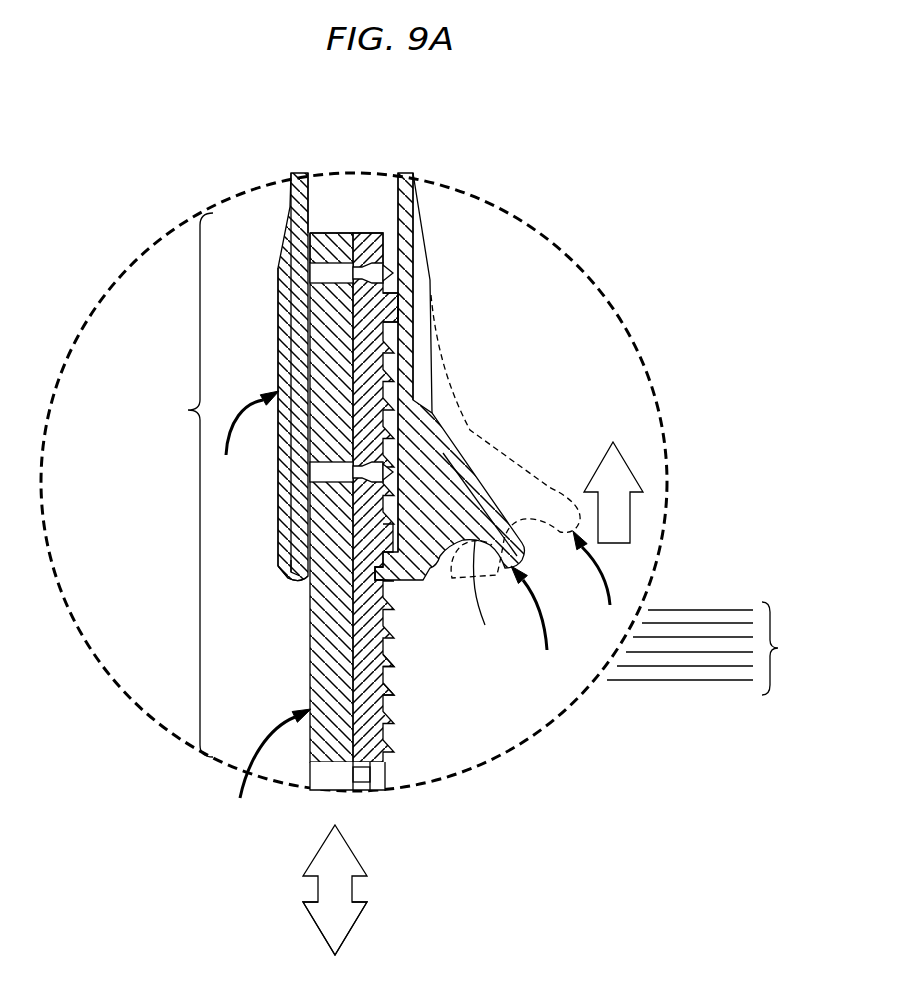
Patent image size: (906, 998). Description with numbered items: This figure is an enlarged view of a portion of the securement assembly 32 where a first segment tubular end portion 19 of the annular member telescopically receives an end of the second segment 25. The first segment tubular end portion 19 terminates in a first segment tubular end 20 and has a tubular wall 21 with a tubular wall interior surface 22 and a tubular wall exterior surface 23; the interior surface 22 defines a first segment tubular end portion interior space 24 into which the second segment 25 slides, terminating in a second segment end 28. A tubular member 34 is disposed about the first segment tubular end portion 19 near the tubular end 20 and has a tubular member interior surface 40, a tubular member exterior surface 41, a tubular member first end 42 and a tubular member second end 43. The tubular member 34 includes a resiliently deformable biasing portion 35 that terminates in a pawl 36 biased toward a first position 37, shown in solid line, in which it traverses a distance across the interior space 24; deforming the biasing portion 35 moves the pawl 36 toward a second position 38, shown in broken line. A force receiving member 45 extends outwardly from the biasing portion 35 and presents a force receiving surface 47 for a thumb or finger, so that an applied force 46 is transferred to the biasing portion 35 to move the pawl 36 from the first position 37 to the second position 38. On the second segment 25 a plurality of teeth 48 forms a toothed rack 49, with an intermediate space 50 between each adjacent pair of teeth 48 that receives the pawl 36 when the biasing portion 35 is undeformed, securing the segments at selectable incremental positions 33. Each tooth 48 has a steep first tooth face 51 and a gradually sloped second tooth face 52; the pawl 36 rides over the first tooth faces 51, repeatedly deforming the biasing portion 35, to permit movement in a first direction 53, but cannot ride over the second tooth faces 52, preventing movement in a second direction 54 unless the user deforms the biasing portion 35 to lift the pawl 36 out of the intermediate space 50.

The first segment tubular end portion 19 is at (310, 680).
The first segment tubular end 20 is at (300, 573).
The tubular wall 21 is at (410, 177).
The tubular wall interior surface 22 is at (398, 215).
The tubular wall exterior surface 23 is at (420, 183).
The first segment tubular end portion interior space 24 is at (350, 188).
The second segment 25 is at (265, 769).
The second segment end 28 is at (330, 232).
The securement assembly 32 is at (188, 485).
The incremental positions 33 is at (705, 648).
The tubular member 34 is at (246, 438).
The biasing portion 35 is at (447, 440).
The pawl 36 is at (415, 580).
The first position 37 is at (534, 625).
The second position 38 is at (595, 584).
The tubular member interior surface 40 is at (290, 490).
The tubular member exterior surface 41 is at (278, 340).
The tubular member first end 42 is at (285, 575).
The tubular member second end 43 is at (290, 207).
The force receiving member 45 is at (460, 497).
The applied force 46 is at (613, 492).
The force receiving surface 47 is at (485, 625).
The plurality of teeth 48 is at (393, 757).
The toothed rack 49 is at (365, 737).
The intermediate space 50 is at (393, 740).
The first tooth face 51 is at (388, 657).
The second tooth face 52 is at (385, 670).
The first direction 53 is at (335, 890).
The second direction 54 is at (335, 928).